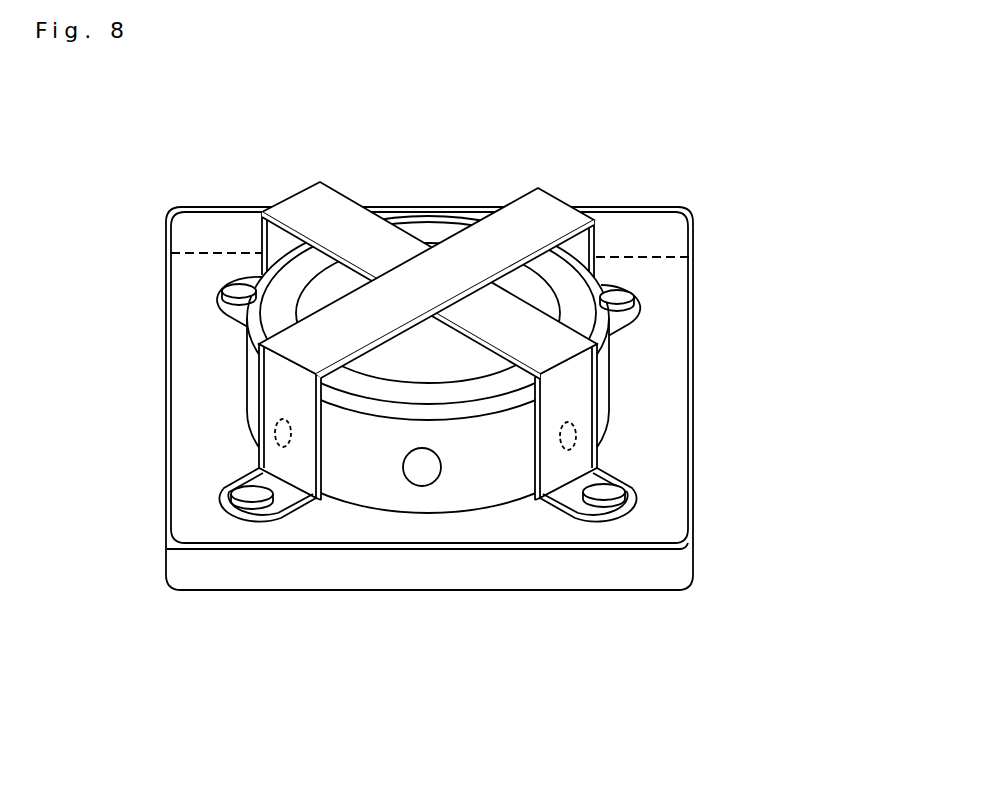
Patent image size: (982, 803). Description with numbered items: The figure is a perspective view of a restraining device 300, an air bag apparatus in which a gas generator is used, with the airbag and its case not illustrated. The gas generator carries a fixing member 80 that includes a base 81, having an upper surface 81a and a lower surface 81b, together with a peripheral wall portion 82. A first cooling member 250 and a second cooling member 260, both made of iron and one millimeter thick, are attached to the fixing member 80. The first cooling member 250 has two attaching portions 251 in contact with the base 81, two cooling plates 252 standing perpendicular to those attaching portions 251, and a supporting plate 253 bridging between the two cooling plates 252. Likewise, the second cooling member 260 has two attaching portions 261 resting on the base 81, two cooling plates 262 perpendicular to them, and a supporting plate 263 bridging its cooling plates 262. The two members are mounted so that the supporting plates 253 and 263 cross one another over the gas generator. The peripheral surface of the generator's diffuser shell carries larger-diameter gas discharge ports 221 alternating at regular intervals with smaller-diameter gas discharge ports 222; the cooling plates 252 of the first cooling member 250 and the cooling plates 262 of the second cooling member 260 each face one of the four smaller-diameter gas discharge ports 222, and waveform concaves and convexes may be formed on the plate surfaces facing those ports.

The restraining device 300 is at (435, 359).
The first cooling member 250 is at (438, 318).
The attaching portions 251 is at (220, 293).
The cooling plates 252 is at (263, 230).
The supporting plate 253 is at (382, 236).
The second cooling member 260 is at (348, 375).
The attaching portions 261 is at (283, 501).
The cooling plates 262 is at (265, 388).
The supporting plate 263 is at (303, 340).
The fixing member 80 is at (507, 394).
The base 81 is at (508, 369).
The upper surface 81a is at (656, 239).
The lower surface 81b is at (643, 592).
The peripheral wall portion 82 is at (237, 572).
The larger-diameter gas discharge ports 221 is at (422, 477).
The smaller-diameter gas discharge ports 222 is at (274, 436).